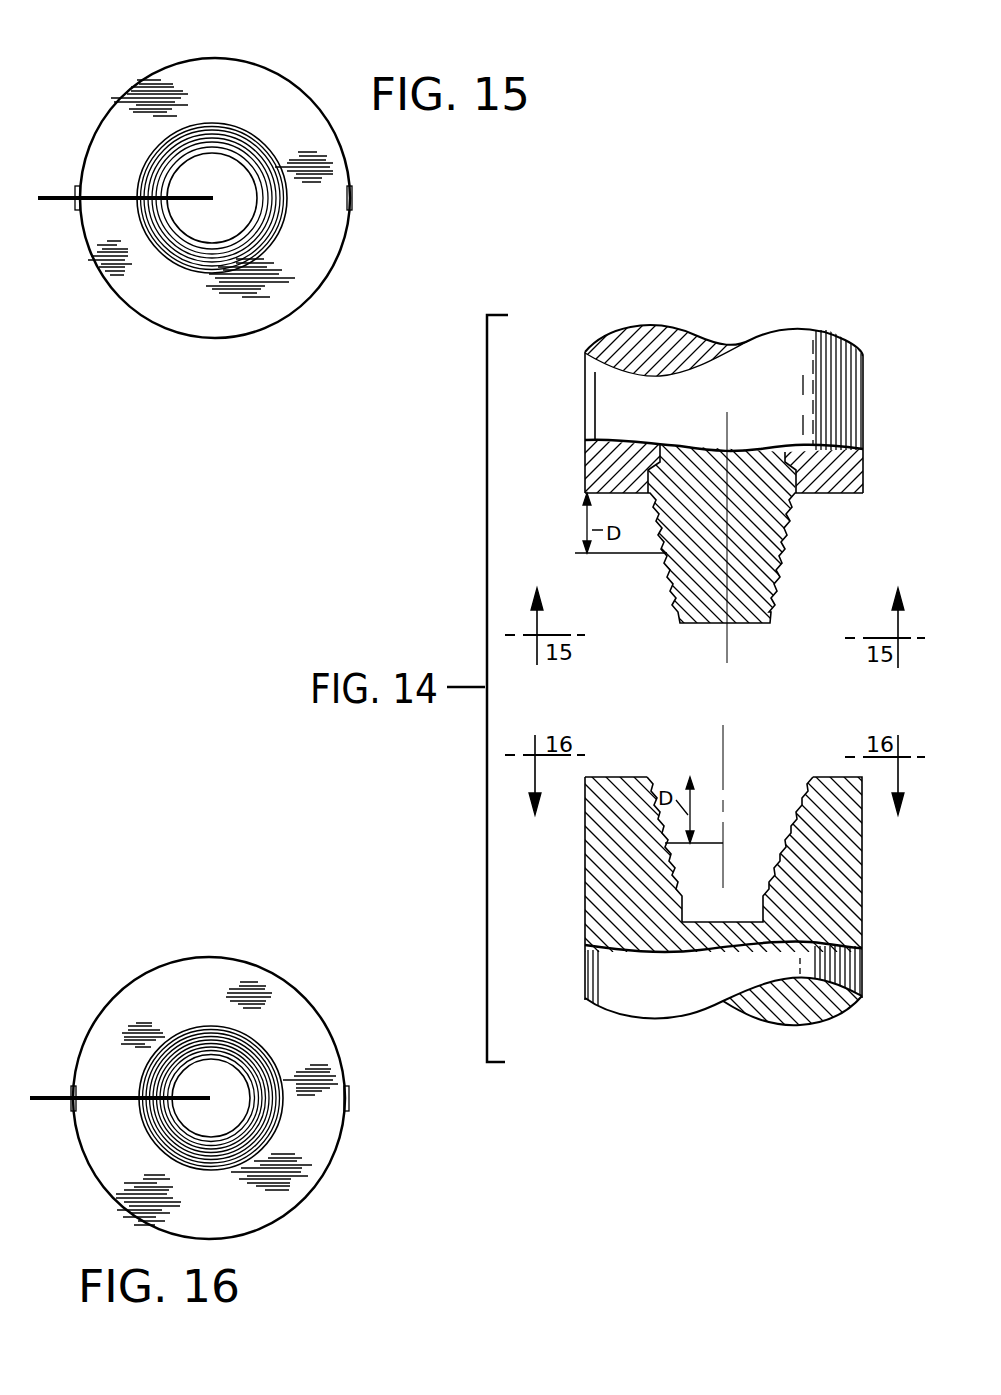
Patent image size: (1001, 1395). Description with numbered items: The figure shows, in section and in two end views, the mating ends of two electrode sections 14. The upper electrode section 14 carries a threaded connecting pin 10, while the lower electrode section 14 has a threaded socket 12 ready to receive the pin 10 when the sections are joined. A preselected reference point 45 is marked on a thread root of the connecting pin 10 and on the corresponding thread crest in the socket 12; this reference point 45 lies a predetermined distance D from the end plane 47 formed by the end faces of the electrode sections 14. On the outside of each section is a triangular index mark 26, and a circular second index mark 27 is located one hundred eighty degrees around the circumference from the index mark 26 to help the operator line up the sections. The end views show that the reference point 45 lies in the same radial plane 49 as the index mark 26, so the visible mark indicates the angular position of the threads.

In FIG. 15, the connecting pin 10 is at (258, 143).
In FIG. 14, the socket 12 is at (752, 795).
In FIG. 14, the electrode section 14 is at (863, 400).
In FIG. 14, the index mark 26 is at (588, 476).
In FIG. 15, the index mark 26 is at (76, 190).
In FIG. 16, the index mark 26 is at (73, 1096).
In FIG. 14, the second index mark 27 is at (864, 480).
In FIG. 15, the second index mark 27 is at (352, 190).
In FIG. 16, the second index mark 27 is at (348, 1094).
In FIG. 14, the preselected reference point 45 is at (670, 556).
In FIG. 15, the preselected reference point 45 is at (155, 200).
In FIG. 16, the preselected reference point 45 is at (150, 1098).
In FIG. 14, the end plane 47 is at (833, 494).
In FIG. 15, the end plane 47 is at (252, 75).
In FIG. 16, the end plane 47 is at (302, 1014).
In FIG. 15, the radial plane 49 is at (118, 198).
In FIG. 16, the radial plane 49 is at (94, 1097).